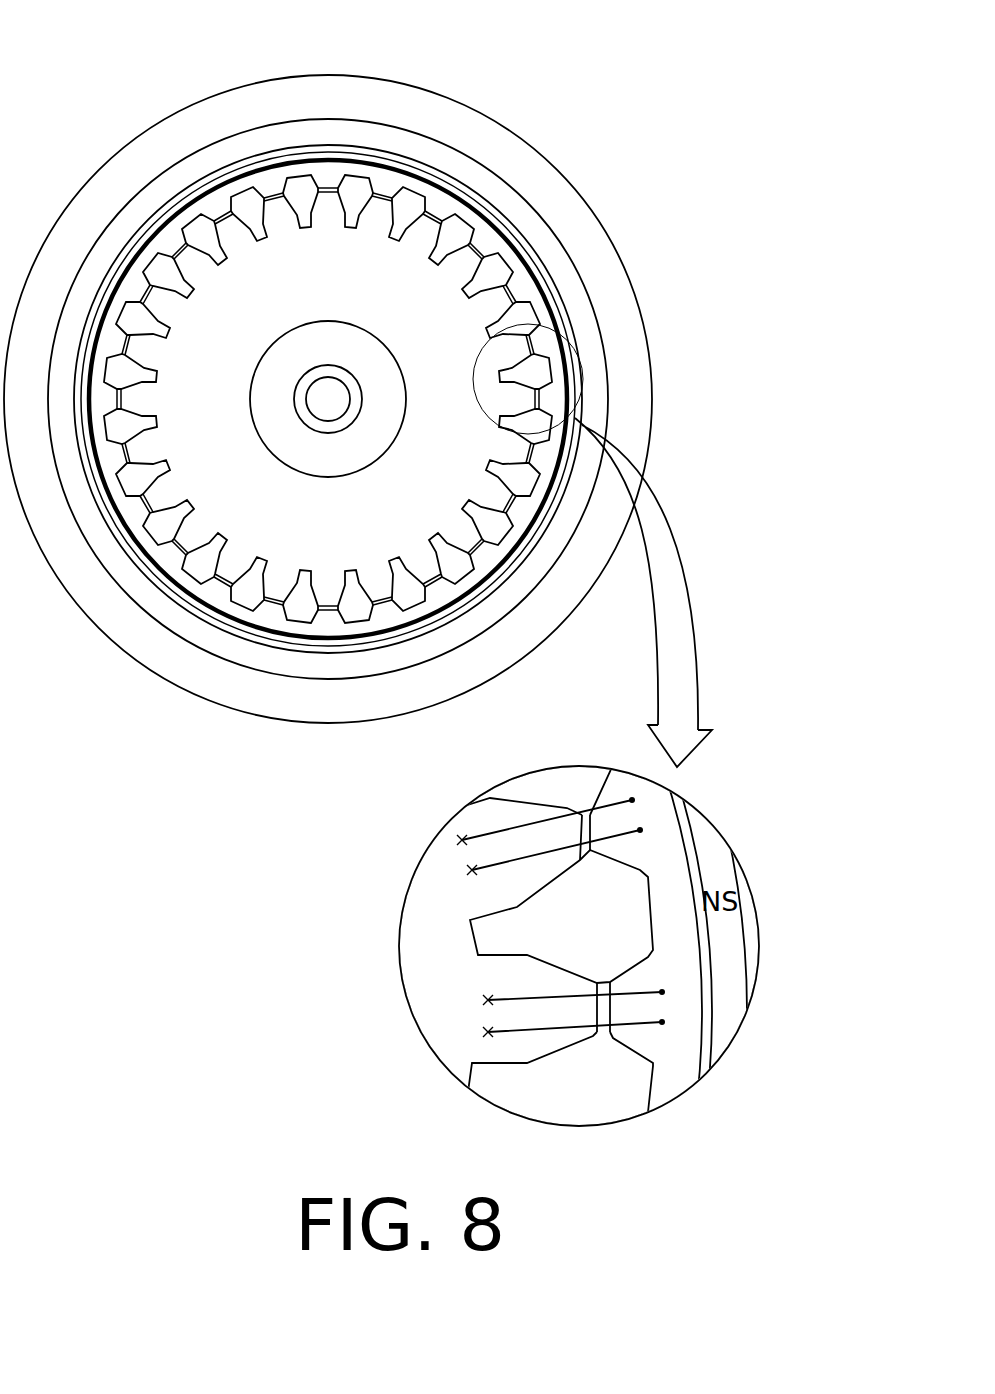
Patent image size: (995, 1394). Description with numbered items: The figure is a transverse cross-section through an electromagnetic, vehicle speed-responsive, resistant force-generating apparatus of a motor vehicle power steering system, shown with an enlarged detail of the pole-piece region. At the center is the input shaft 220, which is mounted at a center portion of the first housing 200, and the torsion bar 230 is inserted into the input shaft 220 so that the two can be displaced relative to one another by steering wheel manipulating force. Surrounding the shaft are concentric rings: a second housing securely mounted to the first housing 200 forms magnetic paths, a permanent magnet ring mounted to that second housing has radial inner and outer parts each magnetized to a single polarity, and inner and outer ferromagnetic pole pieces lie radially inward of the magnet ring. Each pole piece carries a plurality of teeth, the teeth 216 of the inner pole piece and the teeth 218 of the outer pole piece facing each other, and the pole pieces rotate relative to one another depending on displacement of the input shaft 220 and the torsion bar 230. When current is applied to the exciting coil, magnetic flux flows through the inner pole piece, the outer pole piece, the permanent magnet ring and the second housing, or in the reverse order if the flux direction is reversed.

The first housing 200 is at (498, 157).
The input shaft 220 is at (302, 350).
The torsion bar 230 is at (330, 404).
The teeth of inner ferromagnetic pole piece 216 is at (543, 1047).
The teeth of outer ferromagnetic pole piece 218 is at (637, 1038).